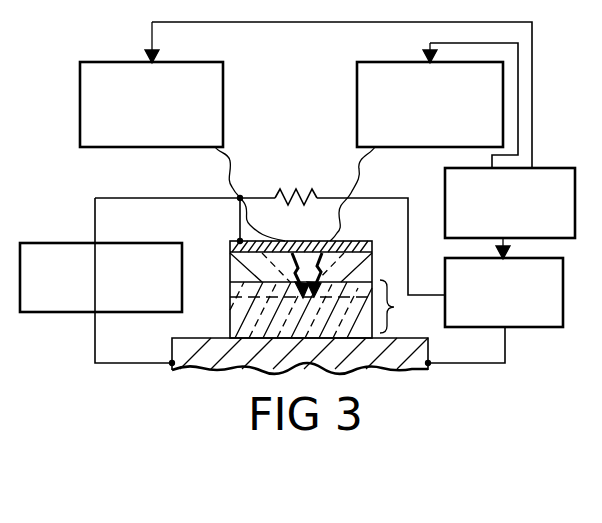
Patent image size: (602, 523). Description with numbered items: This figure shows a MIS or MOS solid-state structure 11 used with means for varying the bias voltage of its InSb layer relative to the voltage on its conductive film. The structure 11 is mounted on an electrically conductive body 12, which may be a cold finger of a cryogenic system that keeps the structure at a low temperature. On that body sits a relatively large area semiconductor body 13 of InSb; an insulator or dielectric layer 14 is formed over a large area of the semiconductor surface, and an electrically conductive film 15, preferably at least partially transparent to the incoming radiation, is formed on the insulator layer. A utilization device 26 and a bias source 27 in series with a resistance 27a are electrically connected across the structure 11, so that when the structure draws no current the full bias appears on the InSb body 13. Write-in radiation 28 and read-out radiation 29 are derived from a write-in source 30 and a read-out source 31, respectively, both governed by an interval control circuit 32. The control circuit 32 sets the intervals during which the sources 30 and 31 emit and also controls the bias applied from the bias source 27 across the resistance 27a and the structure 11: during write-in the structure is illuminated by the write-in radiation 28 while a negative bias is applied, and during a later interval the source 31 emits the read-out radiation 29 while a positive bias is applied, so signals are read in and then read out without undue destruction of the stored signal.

The solid-state structure 11 is at (313, 270).
The electrically conductive body 12 is at (172, 368).
The semiconductor body 13 is at (392, 308).
The insulator layer 14 is at (372, 270).
The electrically conductive film 15 is at (372, 241).
The utilization device 26 is at (46, 314).
The bias source 27 is at (560, 328).
The resistance 27a is at (301, 210).
The write-in radiation 28 is at (230, 169).
The read-out radiation 29 is at (366, 162).
The write-in radiation source 30 is at (226, 61).
The read-out radiation source 31 is at (356, 88).
The interval control circuit 32 is at (445, 168).